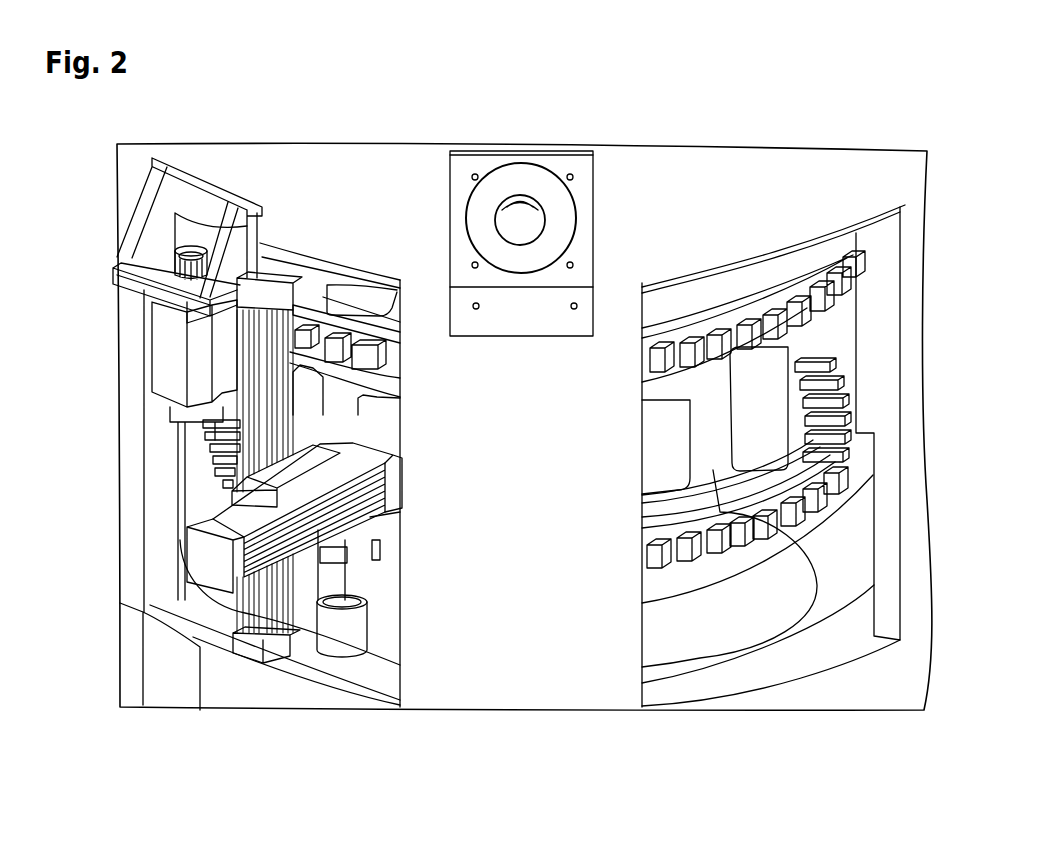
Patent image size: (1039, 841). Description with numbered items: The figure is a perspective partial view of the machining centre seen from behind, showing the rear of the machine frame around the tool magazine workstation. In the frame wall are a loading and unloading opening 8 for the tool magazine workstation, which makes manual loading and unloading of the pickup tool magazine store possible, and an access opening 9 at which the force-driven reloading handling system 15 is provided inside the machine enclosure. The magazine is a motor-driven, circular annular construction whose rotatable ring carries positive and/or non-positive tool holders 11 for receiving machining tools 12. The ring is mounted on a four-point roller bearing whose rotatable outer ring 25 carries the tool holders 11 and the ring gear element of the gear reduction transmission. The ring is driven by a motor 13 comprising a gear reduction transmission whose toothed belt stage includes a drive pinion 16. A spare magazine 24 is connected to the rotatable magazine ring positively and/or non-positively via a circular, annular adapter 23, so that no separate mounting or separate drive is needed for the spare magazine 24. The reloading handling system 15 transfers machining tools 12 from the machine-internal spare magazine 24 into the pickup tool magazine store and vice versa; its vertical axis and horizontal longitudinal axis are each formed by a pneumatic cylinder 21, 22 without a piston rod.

The loading and unloading opening 8 is at (687, 688).
The access opening 9 is at (180, 616).
The tool holders 11 is at (727, 345).
The machining tools 12 is at (348, 628).
The motor 13 is at (175, 350).
The reloading handling system 15 is at (294, 623).
The pneumatic cylinder 21 is at (265, 537).
The drive pinion 16 is at (113, 272).
The pneumatic cylinder 22 is at (237, 630).
The adapter 23 is at (785, 513).
The spare magazine 24 is at (642, 572).
The rotatable outer ring 25 is at (732, 302).